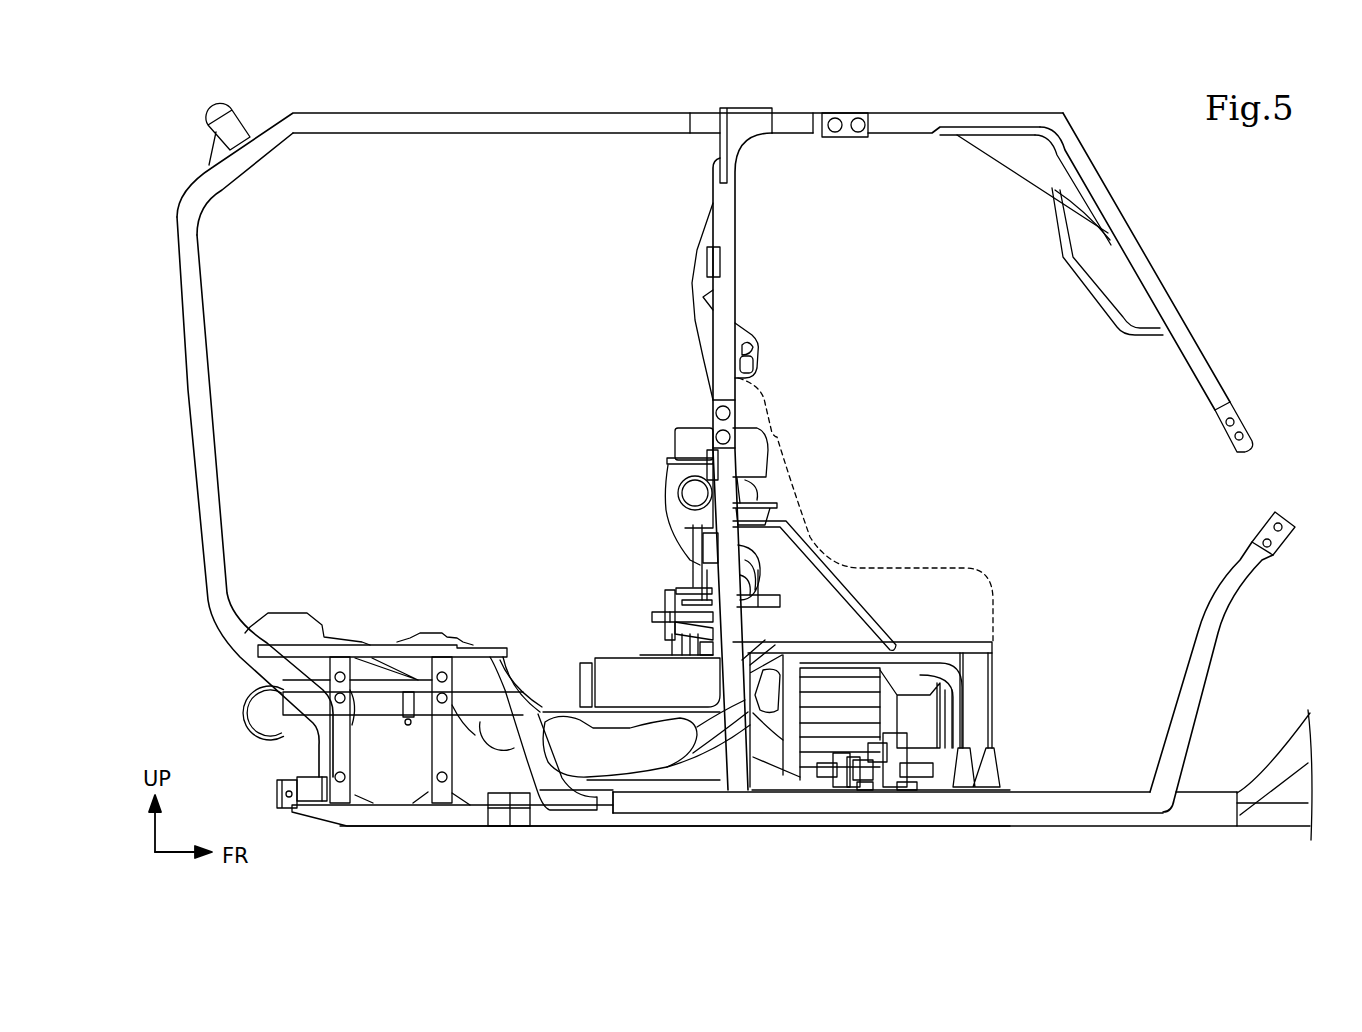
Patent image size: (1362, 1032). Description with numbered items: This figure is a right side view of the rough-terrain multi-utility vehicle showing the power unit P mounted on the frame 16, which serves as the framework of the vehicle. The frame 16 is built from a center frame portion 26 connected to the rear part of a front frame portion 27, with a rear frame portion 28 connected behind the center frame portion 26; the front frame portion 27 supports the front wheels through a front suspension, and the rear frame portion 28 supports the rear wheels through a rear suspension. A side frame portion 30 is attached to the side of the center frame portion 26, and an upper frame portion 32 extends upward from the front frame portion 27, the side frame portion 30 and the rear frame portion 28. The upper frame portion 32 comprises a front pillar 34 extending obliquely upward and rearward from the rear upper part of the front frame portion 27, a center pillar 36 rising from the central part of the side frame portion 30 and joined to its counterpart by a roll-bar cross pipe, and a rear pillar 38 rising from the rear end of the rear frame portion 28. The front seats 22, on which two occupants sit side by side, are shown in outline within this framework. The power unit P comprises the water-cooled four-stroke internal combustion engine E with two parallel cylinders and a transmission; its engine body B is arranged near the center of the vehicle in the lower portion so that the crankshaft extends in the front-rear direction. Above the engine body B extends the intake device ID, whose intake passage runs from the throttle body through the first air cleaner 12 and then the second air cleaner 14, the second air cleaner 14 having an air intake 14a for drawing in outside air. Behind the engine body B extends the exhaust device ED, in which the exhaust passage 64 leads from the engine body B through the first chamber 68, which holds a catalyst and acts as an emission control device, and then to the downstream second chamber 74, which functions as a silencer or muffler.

The first air cleaner 12 is at (668, 490).
The second air cleaner 14 is at (693, 433).
The air intake 14a is at (690, 485).
The frame 16 is at (1015, 826).
The front seats 22 is at (777, 437).
The center frame portion 26 is at (672, 817).
The front frame portion 27 is at (1275, 812).
The rear frame portion 28 is at (382, 645).
The side frame portion 30 is at (787, 800).
The upper frame portion 32 is at (470, 113).
The front pillar 34 is at (1155, 268).
The center pillar 36 is at (727, 282).
The rear pillar 38 is at (197, 398).
The exhaust passage 64 is at (385, 713).
The first chamber 68 is at (497, 735).
The second chamber 74 is at (257, 707).
The intake device ID is at (673, 414).
The engine body B is at (680, 590).
The internal combustion engine E is at (658, 586).
The power unit P is at (626, 629).
The exhaust device ED is at (254, 727).